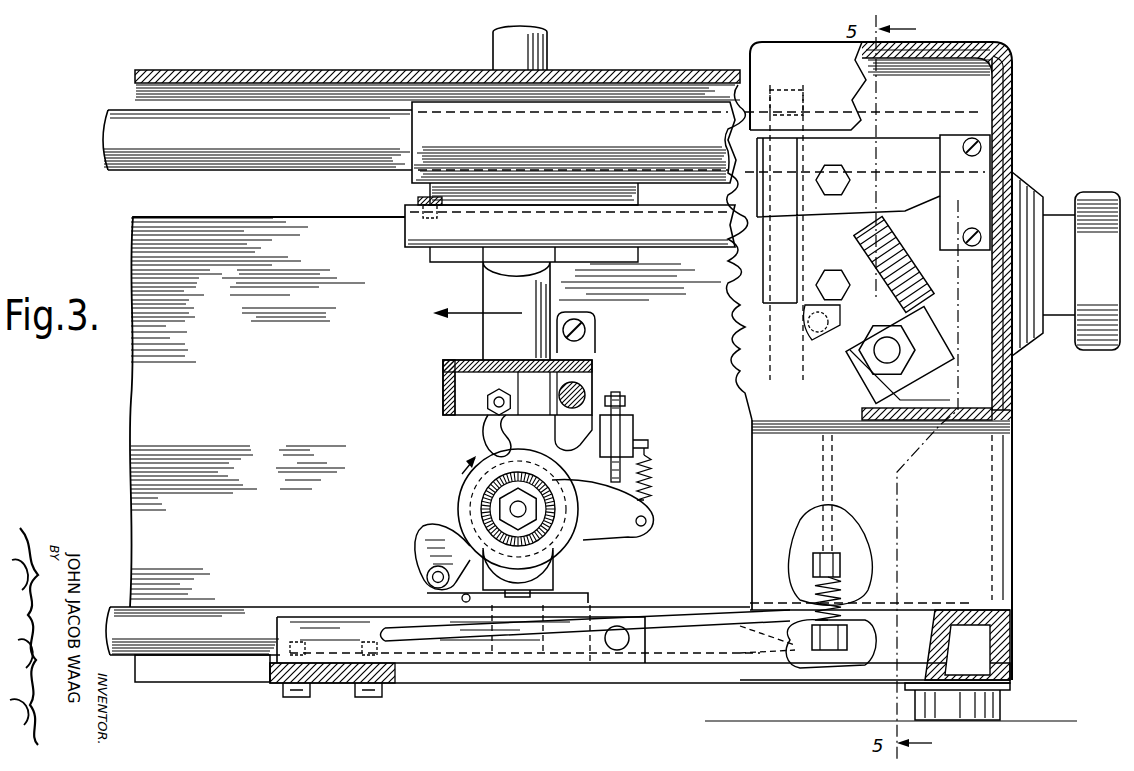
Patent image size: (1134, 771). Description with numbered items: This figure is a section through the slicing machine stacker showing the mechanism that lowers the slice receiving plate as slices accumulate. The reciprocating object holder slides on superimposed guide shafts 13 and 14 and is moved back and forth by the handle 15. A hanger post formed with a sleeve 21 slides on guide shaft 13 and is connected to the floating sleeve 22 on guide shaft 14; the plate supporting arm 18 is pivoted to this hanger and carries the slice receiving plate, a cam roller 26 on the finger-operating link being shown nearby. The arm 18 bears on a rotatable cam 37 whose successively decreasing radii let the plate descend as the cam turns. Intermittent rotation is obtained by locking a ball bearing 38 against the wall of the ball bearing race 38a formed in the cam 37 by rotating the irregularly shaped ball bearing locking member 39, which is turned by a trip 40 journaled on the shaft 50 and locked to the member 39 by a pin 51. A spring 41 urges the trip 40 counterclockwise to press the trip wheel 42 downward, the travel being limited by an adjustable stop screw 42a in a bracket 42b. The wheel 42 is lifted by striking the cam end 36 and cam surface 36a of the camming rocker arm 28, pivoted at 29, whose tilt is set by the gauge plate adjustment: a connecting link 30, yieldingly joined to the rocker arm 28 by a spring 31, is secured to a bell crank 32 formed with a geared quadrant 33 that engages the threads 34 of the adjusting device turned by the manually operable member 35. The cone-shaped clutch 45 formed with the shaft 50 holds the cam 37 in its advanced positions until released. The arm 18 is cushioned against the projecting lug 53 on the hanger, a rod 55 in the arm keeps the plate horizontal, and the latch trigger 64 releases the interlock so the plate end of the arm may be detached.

The guide shaft 13 is at (329, 172).
The guide shaft 14 is at (230, 607).
The handle 15 is at (546, 60).
The plate supporting arm 18 is at (443, 381).
The sleeve 21 is at (412, 124).
The floating sleeve 22 is at (590, 601).
The cam roller 26 is at (430, 214).
The camming rocker arm 28 is at (665, 630).
The pivot 29 is at (617, 650).
The connecting link 30 is at (828, 548).
The spring 31 is at (843, 590).
The bell crank 32 is at (805, 324).
The geared quadrant 33 is at (935, 332).
The threads 34 is at (866, 251).
The manually operable member 35 is at (1086, 195).
The cam end 36 is at (430, 597).
The cam surface 36a is at (466, 600).
The rotatable cam 37 is at (495, 441).
The ball bearing 38 is at (462, 490).
The ball bearing race 38a is at (462, 470).
The ball bearing locking member 39 is at (611, 456).
The trip 40 is at (424, 537).
The spring 41 is at (652, 493).
The trip wheel 42 is at (431, 577).
The adjustable stop screw 42a is at (642, 393).
The bracket 42b is at (634, 433).
The cone-shaped clutch 45 is at (546, 545).
The shaft 50 is at (497, 510).
The pin 51 is at (596, 505).
The projecting lug 53 is at (596, 320).
The rod 55 is at (592, 383).
The latch trigger 64 is at (490, 428).